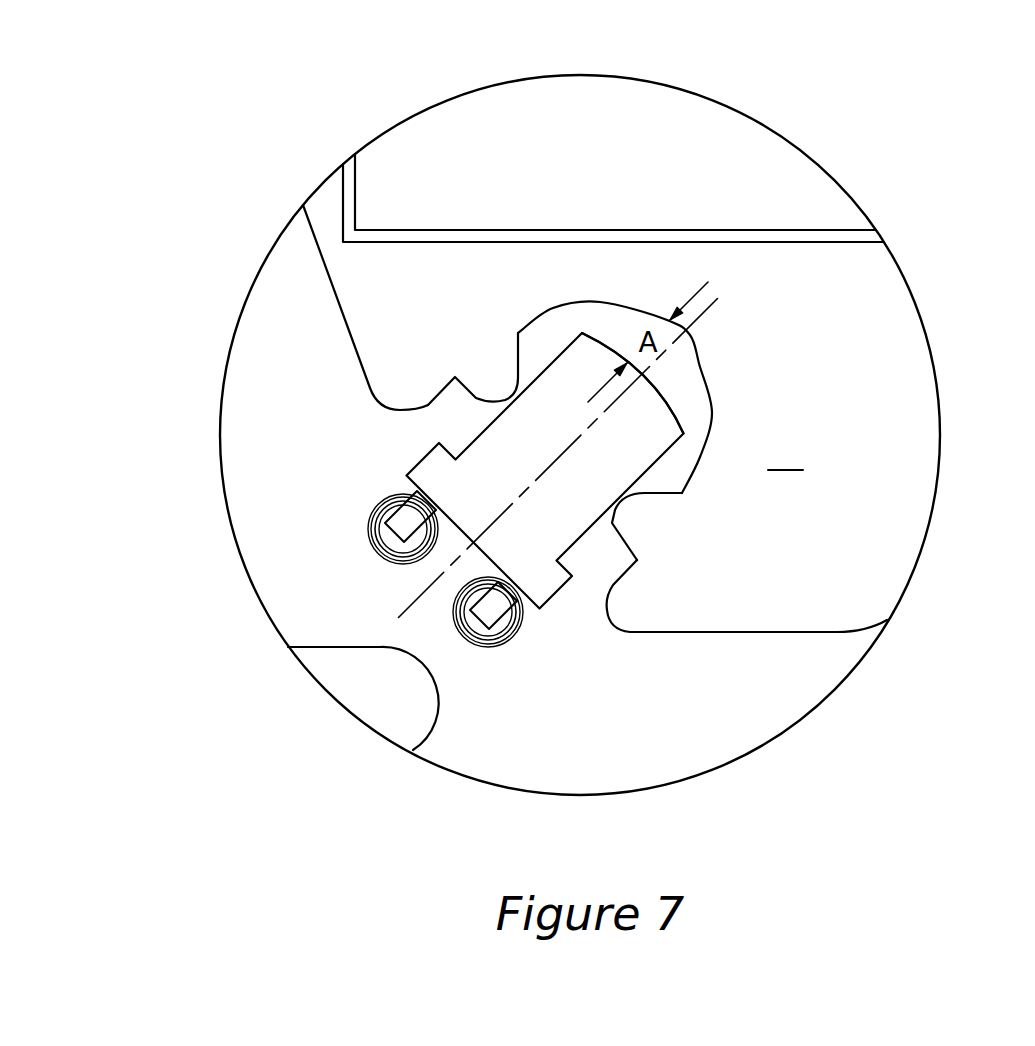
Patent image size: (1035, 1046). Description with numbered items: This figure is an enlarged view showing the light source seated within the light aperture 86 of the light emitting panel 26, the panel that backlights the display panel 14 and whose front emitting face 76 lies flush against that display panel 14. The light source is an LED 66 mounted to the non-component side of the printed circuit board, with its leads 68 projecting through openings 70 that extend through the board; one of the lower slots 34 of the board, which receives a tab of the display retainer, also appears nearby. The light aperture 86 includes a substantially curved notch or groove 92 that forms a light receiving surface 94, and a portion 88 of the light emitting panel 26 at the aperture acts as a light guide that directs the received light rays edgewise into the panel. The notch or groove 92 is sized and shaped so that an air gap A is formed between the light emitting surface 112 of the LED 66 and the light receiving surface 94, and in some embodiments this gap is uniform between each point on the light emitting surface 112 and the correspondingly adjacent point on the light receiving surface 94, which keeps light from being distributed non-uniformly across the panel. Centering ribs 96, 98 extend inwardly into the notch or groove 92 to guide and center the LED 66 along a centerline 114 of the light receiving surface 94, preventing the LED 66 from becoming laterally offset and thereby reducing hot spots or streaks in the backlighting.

The display panel 14 is at (757, 170).
The light emitting panel 26 is at (857, 458).
The lower slot 34 is at (373, 688).
The LED 66 is at (512, 457).
The leads 68 is at (410, 520).
The openings 70 is at (392, 538).
The front emitting face 76 is at (785, 454).
The light aperture 86 is at (588, 638).
The light guide 88 is at (787, 523).
The notch or groove 92 is at (603, 327).
The light receiving surface 94 is at (697, 354).
The centering rib 96 is at (508, 392).
The centering rib 98 is at (622, 507).
The light emitting surface 112 is at (663, 395).
The centerline 114 is at (575, 443).